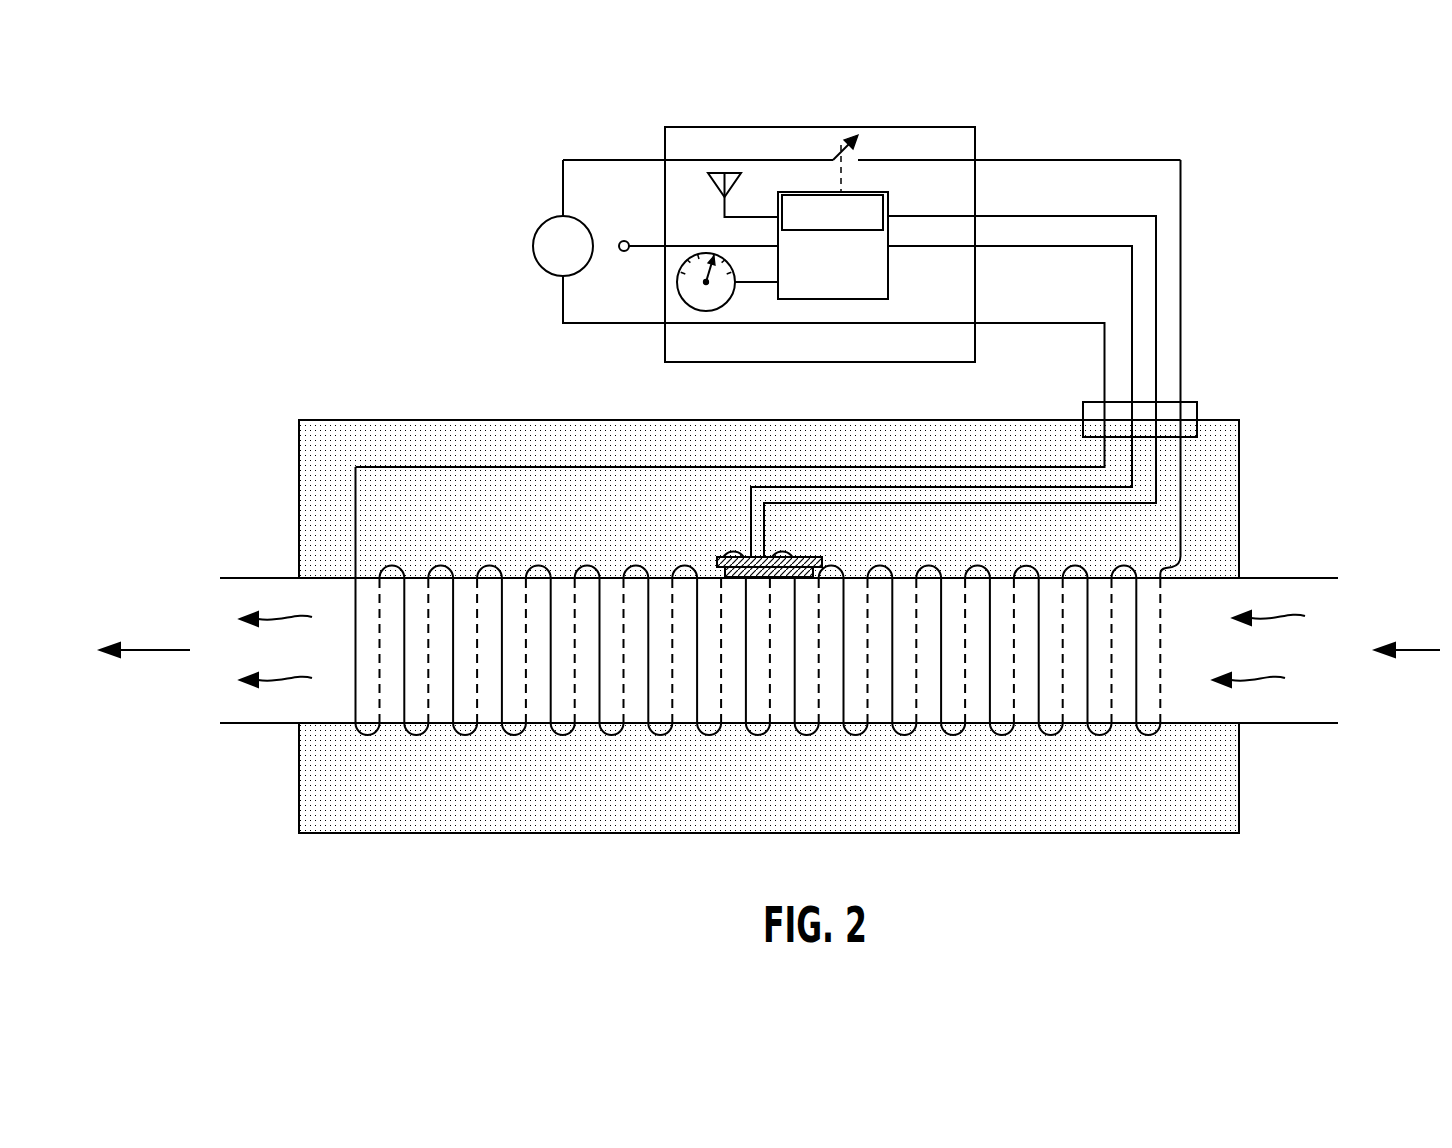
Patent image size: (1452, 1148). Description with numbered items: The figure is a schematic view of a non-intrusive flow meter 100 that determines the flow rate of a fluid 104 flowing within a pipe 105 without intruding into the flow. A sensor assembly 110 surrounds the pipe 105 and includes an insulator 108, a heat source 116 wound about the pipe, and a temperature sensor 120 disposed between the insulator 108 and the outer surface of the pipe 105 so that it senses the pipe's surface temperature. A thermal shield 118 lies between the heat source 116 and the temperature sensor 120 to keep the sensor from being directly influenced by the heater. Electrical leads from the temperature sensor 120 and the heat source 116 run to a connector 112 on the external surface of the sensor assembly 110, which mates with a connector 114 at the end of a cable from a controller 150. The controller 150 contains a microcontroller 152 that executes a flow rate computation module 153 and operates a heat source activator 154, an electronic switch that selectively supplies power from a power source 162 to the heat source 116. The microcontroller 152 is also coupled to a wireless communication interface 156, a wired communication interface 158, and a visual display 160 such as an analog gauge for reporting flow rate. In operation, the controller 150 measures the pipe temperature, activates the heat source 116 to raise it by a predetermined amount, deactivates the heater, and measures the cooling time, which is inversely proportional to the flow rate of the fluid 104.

The flow meter 100 is at (347, 200).
The fluid 104 is at (1186, 661).
The pipe 105 is at (1297, 577).
The insulator 108 is at (458, 440).
The sensor assembly 110 is at (337, 419).
The connector 112 is at (1199, 432).
The connector 114 is at (1200, 412).
The heat source 116 is at (465, 737).
The thermal shield 118 is at (718, 555).
The temperature sensor 120 is at (805, 557).
The controller 150 is at (792, 127).
The microcontroller 152 is at (811, 296).
The flow rate computation module 153 is at (811, 227).
The heat source activator 154 is at (843, 125).
The wireless communication interface 156 is at (723, 170).
The wired communication interface 158 is at (624, 240).
The visual display 160 is at (677, 282).
The power source 162 is at (533, 245).